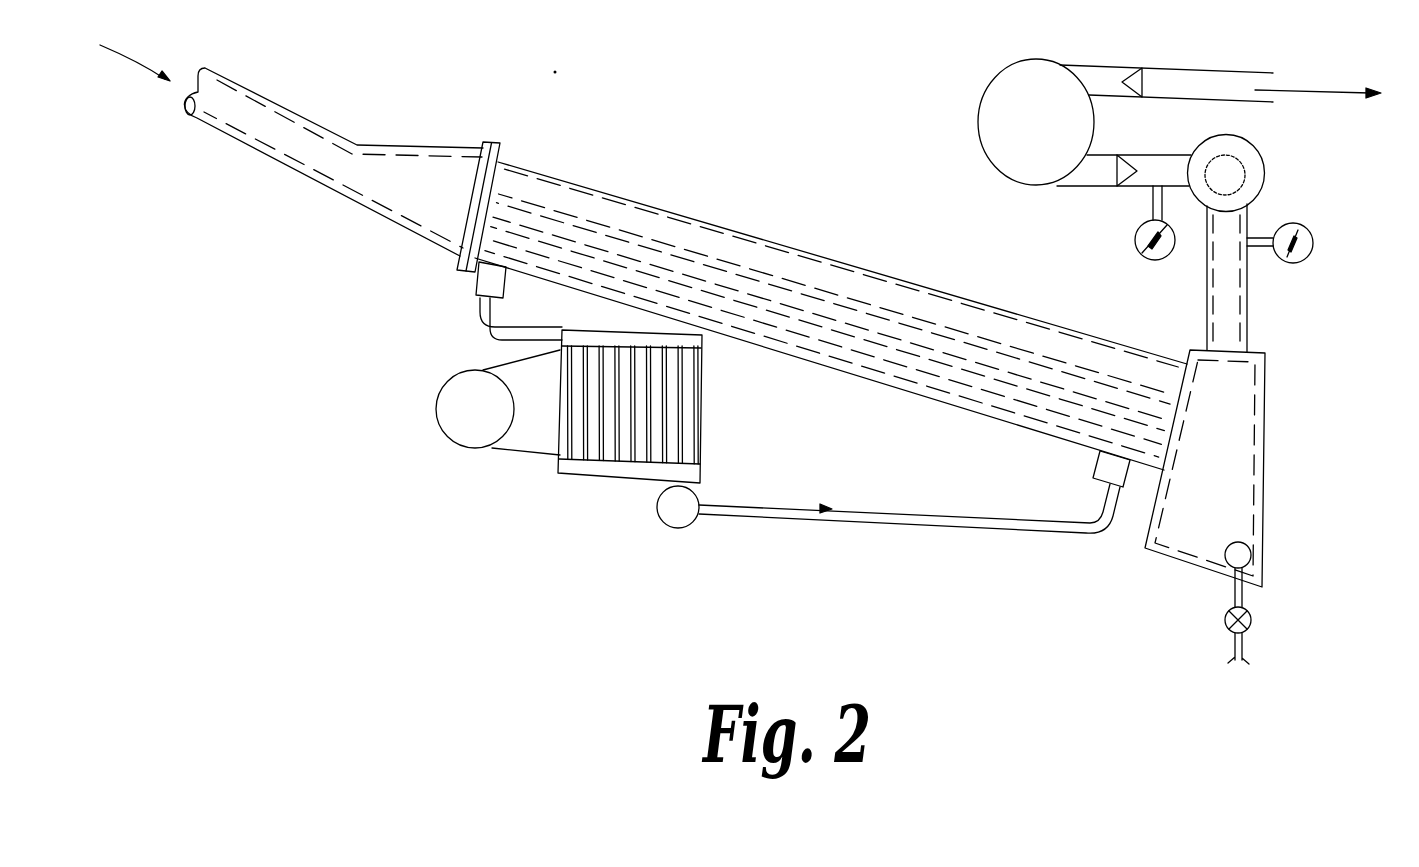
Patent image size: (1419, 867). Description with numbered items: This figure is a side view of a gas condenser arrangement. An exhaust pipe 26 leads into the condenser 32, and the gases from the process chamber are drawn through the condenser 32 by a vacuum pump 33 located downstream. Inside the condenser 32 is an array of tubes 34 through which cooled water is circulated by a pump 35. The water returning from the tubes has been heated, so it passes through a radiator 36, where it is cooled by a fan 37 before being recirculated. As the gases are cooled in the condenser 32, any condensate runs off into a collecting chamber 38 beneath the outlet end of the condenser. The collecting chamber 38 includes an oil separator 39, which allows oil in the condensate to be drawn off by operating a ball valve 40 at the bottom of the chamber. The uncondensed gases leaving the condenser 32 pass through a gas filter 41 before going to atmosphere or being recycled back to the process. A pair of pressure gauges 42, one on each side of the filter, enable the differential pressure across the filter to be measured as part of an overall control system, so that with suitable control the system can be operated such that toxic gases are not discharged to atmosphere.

The exhaust pipe 26 is at (302, 132).
The condenser 32 is at (662, 228).
The vacuum pump 33 is at (1005, 90).
The array of tubes 34 is at (848, 295).
The pump 35 is at (678, 515).
The radiator 36 is at (678, 405).
The fan 37 is at (453, 393).
The collecting chamber 38 is at (1238, 457).
The oil separator 39 is at (1243, 557).
The ball valve 40 is at (1253, 623).
The gas filter 41 is at (1247, 170).
The pressure gauges 42 is at (1142, 253).